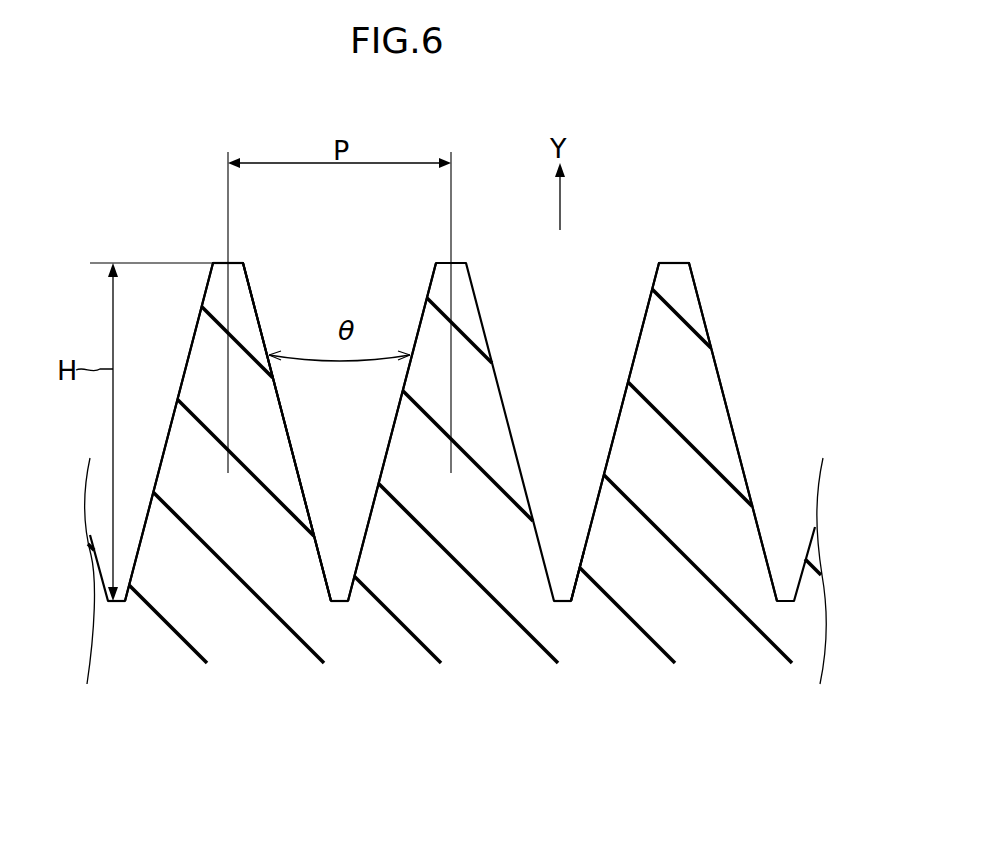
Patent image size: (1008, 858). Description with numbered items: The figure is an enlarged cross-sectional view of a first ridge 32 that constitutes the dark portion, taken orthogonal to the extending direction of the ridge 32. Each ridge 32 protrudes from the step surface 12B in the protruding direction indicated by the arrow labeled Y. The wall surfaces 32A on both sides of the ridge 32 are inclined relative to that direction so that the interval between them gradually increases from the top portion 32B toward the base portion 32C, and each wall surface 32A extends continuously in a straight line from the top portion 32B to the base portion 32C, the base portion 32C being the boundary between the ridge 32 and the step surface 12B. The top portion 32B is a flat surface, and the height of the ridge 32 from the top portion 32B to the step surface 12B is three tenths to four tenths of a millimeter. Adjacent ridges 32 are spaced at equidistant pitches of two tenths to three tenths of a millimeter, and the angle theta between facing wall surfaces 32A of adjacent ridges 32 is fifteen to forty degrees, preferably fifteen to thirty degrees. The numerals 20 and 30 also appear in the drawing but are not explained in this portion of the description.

The fastening member 20 is at (797, 260).
The thread portion 30 is at (775, 367).
The ridge 32 is at (212, 262).
The wall surfaces 32A is at (250, 287).
The top portion 32B is at (232, 262).
The base portion 32C is at (604, 575).
The step surface 12B is at (138, 600).